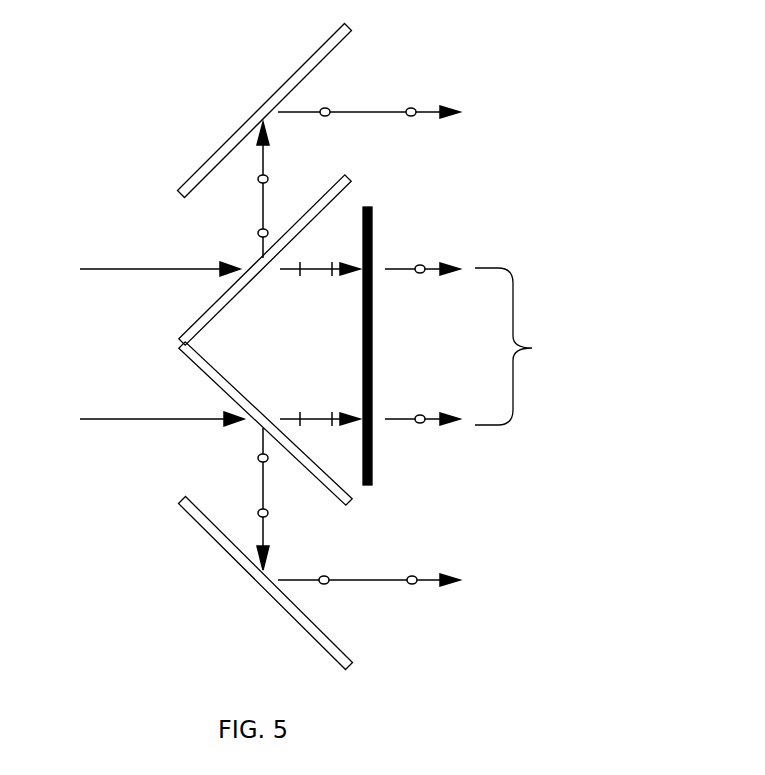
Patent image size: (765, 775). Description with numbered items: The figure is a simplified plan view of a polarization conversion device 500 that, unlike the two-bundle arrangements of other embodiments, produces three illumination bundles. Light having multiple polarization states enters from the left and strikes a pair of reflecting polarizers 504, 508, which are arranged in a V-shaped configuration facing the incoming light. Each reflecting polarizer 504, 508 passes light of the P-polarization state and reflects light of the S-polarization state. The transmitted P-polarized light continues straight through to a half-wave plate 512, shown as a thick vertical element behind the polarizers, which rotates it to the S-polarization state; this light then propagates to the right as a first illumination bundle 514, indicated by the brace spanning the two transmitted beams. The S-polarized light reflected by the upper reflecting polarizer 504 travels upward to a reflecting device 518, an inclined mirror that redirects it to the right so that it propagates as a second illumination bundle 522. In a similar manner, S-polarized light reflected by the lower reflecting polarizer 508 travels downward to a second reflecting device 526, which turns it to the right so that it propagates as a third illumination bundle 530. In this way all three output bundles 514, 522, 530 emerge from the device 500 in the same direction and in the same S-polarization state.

The polarization conversion device 500 is at (69, 91).
The reflecting polarizer 504 is at (358, 183).
The reflecting polarizer 508 is at (353, 510).
The half-wave plate 512 is at (352, 360).
The first illumination bundle 514 is at (494, 344).
The reflecting device 518 is at (273, 75).
The second illumination bundle 522 is at (470, 90).
The reflecting device 526 is at (200, 543).
The third illumination bundle 530 is at (385, 597).